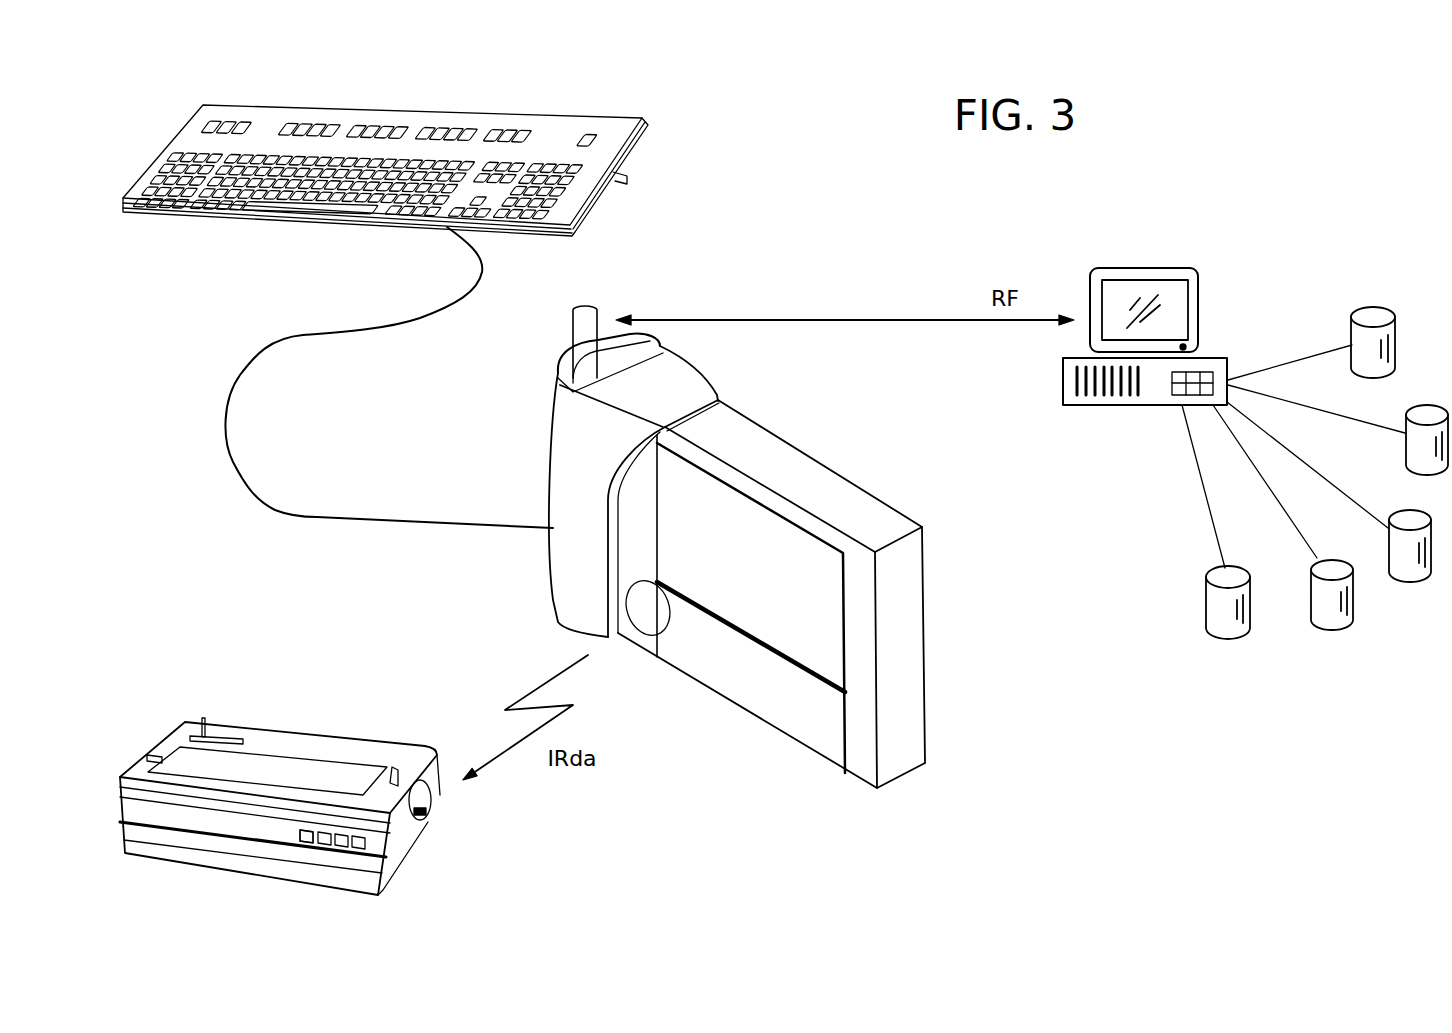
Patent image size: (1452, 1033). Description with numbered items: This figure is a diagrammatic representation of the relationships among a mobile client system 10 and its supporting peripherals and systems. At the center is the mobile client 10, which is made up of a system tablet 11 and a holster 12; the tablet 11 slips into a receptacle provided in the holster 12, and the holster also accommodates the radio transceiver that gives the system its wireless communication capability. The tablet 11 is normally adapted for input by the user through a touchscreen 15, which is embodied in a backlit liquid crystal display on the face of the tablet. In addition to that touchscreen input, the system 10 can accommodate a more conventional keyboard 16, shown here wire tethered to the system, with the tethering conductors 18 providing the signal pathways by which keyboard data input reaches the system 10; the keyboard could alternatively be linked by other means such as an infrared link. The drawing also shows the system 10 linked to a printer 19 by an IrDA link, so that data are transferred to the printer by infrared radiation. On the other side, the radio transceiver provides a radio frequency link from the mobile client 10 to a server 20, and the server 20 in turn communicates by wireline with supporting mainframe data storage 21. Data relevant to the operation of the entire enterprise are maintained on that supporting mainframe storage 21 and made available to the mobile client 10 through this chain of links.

The mobile client personal computer system 10 is at (810, 428).
The system tablet 11 is at (868, 498).
The holster 12 is at (555, 590).
The touchscreen 15 is at (830, 608).
The keyboard 16 is at (388, 108).
The tethering conductors 18 is at (243, 473).
The printer 19 is at (262, 730).
The server 20 is at (1067, 405).
The mainframe data storage 21 is at (1435, 413).